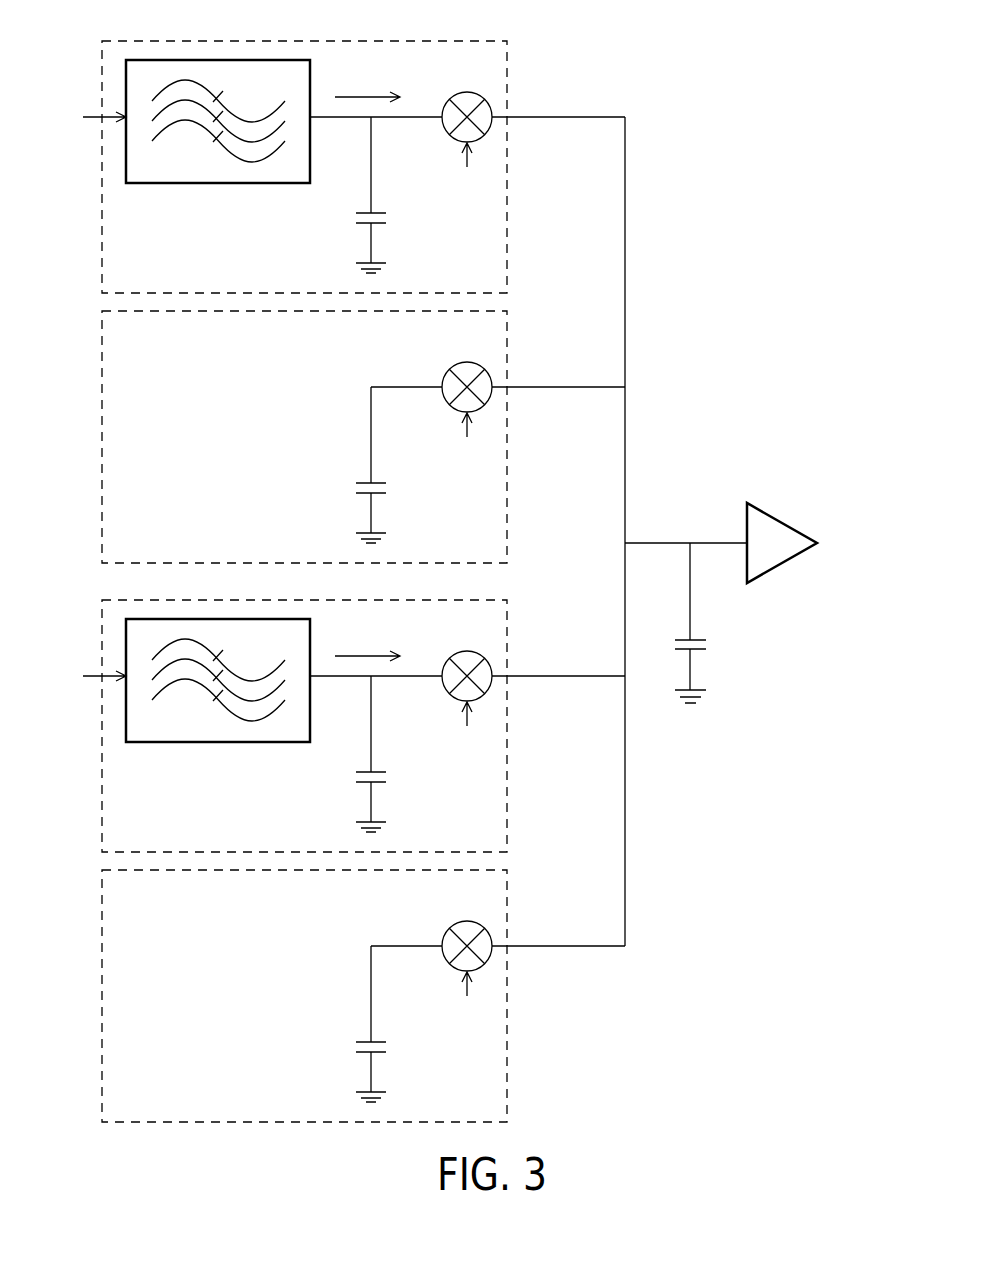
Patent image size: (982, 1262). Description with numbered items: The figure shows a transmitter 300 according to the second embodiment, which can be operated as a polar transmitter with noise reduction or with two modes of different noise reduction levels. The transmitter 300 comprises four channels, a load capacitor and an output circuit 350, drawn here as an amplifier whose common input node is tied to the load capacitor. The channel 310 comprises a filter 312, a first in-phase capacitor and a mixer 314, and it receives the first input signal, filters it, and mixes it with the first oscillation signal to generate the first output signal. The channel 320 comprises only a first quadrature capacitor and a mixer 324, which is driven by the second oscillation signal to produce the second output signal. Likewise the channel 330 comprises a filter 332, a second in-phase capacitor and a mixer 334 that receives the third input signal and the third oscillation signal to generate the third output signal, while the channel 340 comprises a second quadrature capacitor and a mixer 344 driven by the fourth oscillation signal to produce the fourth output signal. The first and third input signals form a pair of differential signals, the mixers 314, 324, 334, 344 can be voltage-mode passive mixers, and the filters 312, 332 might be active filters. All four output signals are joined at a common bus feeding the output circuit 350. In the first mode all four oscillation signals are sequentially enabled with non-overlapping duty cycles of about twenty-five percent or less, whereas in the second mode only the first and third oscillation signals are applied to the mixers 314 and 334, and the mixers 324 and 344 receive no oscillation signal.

The transmitter 300 is at (714, 168).
The channel 310 is at (507, 211).
The filter 312 is at (210, 60).
The mixer 314 is at (467, 92).
The channel 320 is at (363, 437).
The mixer 324 is at (472, 364).
The channel 330 is at (340, 726).
The filter 332 is at (218, 658).
The mixer 334 is at (472, 653).
The channel 340 is at (363, 996).
The mixer 344 is at (472, 923).
The output circuit 350 is at (787, 521).